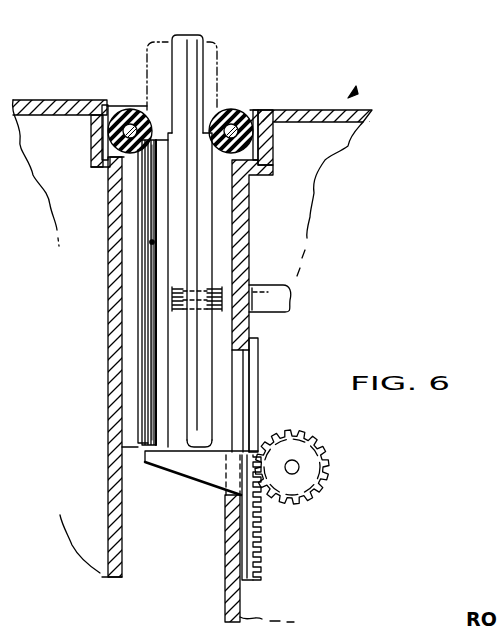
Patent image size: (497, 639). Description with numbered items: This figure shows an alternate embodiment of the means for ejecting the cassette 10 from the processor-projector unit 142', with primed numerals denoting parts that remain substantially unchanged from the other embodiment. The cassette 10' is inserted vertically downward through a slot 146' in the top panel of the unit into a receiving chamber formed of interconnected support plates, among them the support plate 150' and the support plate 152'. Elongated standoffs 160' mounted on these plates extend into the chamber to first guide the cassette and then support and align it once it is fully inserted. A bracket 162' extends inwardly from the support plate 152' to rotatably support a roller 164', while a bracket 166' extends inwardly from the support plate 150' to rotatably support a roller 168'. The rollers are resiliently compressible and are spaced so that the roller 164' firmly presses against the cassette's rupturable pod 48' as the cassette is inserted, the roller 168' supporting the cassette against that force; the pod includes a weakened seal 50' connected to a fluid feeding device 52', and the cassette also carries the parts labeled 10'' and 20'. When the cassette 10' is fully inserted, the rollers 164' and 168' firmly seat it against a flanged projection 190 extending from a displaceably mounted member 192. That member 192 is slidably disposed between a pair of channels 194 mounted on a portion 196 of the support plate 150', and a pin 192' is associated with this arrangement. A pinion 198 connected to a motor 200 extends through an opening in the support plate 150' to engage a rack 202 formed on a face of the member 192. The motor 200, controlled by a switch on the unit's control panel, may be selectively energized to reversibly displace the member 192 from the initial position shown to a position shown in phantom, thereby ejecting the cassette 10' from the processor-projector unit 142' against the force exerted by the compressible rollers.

The cassette 10 is at (101, 298).
The cassette 10' is at (156, 243).
The upper tube extension 10'' is at (224, 77).
The sleeve 20' is at (113, 292).
The rupturable pod 48' is at (110, 292).
The weakened seal 50' is at (115, 229).
The fluid feeding device 52' is at (108, 292).
The processor-projector unit 142' is at (381, 69).
The slot 146' is at (277, 121).
The support plate 150' is at (295, 255).
The support plate 152' is at (80, 367).
The elongated standoffs 160' is at (181, 311).
The bracket 162' is at (75, 132).
The roller 164' is at (99, 105).
The bracket 166' is at (286, 137).
The roller 168' is at (250, 108).
The flanged projection 190 is at (172, 462).
The displaceably mounted member 192 is at (207, 517).
The pin 192' is at (273, 259).
The channels 194 is at (258, 367).
The portion of the support plate 196 is at (223, 582).
The pinion 198 is at (327, 450).
The motor 200 is at (308, 437).
The rack 202 is at (257, 549).